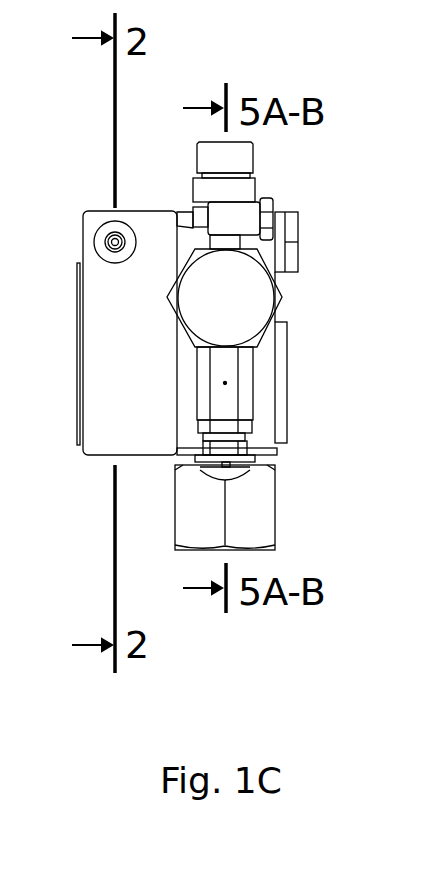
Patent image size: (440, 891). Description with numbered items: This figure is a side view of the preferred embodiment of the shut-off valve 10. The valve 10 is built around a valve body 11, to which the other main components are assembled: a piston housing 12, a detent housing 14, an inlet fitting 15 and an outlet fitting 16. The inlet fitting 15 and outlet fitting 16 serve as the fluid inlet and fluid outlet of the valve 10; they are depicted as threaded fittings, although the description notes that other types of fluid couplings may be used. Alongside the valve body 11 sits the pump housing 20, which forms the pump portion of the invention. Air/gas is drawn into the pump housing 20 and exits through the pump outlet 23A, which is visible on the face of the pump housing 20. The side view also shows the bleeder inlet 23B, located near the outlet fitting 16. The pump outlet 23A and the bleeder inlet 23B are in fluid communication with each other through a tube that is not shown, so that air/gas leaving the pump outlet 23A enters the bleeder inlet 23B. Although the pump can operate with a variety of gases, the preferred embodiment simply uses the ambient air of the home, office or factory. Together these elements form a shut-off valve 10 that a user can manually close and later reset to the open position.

The shut-off valve 10 is at (72, 114).
The pump housing 20 is at (82, 212).
The pump outlet 23A is at (95, 240).
The bleeder inlet 23B is at (192, 210).
The outlet fitting 16 is at (254, 175).
The piston housing 12 is at (284, 297).
The valve body 11 is at (266, 350).
The detent housing 14 is at (254, 383).
The inlet fitting 15 is at (275, 514).